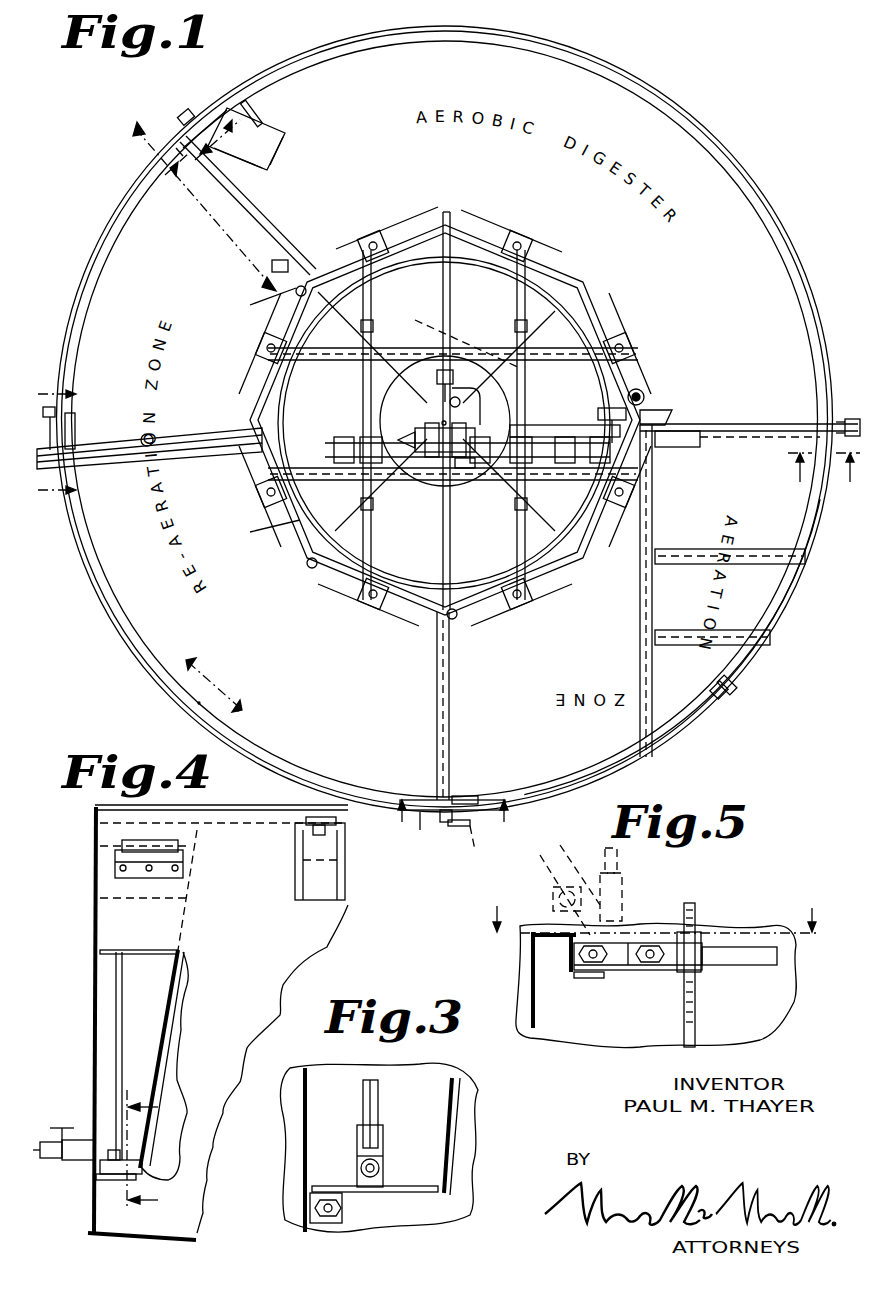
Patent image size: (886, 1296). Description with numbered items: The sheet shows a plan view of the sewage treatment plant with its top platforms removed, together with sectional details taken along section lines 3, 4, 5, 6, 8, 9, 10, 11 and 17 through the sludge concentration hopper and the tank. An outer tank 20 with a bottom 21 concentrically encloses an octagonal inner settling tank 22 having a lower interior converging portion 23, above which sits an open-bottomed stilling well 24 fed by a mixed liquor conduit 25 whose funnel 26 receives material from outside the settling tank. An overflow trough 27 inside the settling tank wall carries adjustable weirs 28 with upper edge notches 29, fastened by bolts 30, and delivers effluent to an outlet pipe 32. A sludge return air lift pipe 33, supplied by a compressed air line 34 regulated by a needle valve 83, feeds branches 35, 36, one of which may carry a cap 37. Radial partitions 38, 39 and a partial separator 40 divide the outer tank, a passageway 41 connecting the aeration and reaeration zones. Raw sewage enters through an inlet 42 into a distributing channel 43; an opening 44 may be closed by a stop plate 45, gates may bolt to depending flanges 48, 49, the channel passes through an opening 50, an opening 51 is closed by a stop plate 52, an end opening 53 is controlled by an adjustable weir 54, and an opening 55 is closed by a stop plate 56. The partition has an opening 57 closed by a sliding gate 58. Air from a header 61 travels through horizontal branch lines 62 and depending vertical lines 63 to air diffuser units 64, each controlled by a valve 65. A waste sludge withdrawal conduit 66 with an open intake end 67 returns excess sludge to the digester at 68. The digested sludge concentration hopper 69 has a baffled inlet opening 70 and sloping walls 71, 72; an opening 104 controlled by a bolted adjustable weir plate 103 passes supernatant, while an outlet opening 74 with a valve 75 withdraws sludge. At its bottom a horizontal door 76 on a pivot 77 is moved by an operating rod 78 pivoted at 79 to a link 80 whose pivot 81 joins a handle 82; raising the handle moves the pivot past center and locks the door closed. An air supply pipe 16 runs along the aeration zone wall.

In FIG. 4, the section line 3— 3 is at (148, 1150).
In FIG. 1, the section line 4— 4 is at (188, 213).
In FIG. 1, the section line 5— 5 is at (207, 162).
In FIG. 5, the section line 6— 6 is at (654, 904).
In FIG. 1, the section line 8— 8 is at (600, 410).
In FIG. 1, the section line 9— 9 is at (220, 669).
In FIG. 1, the section line 10— 10 is at (455, 823).
In FIG. 1, the section line 11— 11 is at (70, 441).
In FIG. 1, the air supply pipe 16 is at (743, 670).
In FIG. 1, the section line 17— 17 is at (823, 477).
In FIG. 1, the outer tank 20 is at (715, 138).
In FIG. 4, the outer tank 20 is at (92, 992).
In FIG. 3, the outer tank 20 is at (470, 1082).
In FIG. 5, the outer tank 20 is at (522, 948).
In FIG. 1, the bottom 21 is at (475, 420).
In FIG. 4, the bottom 21 is at (178, 1235).
In FIG. 1, the inner settling tank 22 is at (262, 535).
In FIG. 1, the lower interior converging portion 23 is at (422, 481).
In FIG. 1, the stilling well 24 is at (502, 372).
In FIG. 1, the mixed liquor conduit 25 is at (540, 425).
In FIG. 1, the funnel 26 is at (690, 448).
In FIG. 1, the overflow trough 27 is at (440, 592).
In FIG. 1, the adjustable weirs 28 is at (306, 566).
In FIG. 1, the upper edge notches 29 is at (442, 584).
In FIG. 1, the bolts 30 is at (508, 275).
In FIG. 1, the outlet pipe 32 is at (195, 432).
In FIG. 1, the sludge return air lift pipe 33 is at (437, 376).
In FIG. 1, the compressed air line 34 is at (433, 439).
In FIG. 1, the branch 35 is at (666, 408).
In FIG. 1, the branch 36 is at (352, 374).
In FIG. 1, the cap 37 is at (270, 300).
In FIG. 1, the radial partition 38 is at (768, 422).
In FIG. 1, the radial partition 39 is at (240, 245).
In FIG. 4, the radial partition 39 is at (108, 916).
In FIG. 3, the radial partition 39 is at (310, 1082).
In FIG. 5, the radial partition 39 is at (538, 1010).
In FIG. 1, the partial separator 40 is at (452, 716).
In FIG. 1, the passageway 41 is at (436, 622).
In FIG. 1, the inlet 42 is at (455, 826).
In FIG. 1, the raw sewage distributing channel 43 is at (498, 800).
In FIG. 1, the opening 44 is at (466, 796).
In FIG. 1, the stop plate 45 is at (452, 810).
In FIG. 1, the depending flange 48 is at (480, 845).
In FIG. 1, the depending flange 49 is at (430, 824).
In FIG. 1, the opening 50 is at (836, 422).
In FIG. 1, the opening 51 is at (726, 692).
In FIG. 1, the stop plate 52 is at (712, 682).
In FIG. 1, the end opening 53 is at (45, 428).
In FIG. 1, the adjustable weir 54 is at (76, 426).
In FIG. 1, the opening 55 is at (195, 706).
In FIG. 1, the stop plate 56 is at (240, 712).
In FIG. 4, the opening 57 is at (295, 867).
In FIG. 1, the gate 58 is at (272, 264).
In FIG. 4, the gate 58 is at (310, 817).
In FIG. 1, the header 61 is at (428, 462).
In FIG. 1, the horizontal branch lines 62 is at (372, 300).
In FIG. 1, the depending vertical line 63 is at (372, 234).
In FIG. 1, the air diffuser unit 64 is at (345, 244).
In FIG. 1, the valve 65 is at (374, 326).
In FIG. 1, the waste sludge withdrawal conduit 66 is at (422, 318).
In FIG. 1, the open intake end 67 is at (323, 272).
In FIG. 1, the return point 68 is at (646, 390).
In FIG. 1, the digested sludge concentration hopper 69 is at (290, 140).
In FIG. 4, the digested sludge concentration hopper 69 is at (182, 970).
In FIG. 3, the digested sludge concentration hopper 69 is at (456, 1118).
In FIG. 5, the digested sludge concentration hopper 69 is at (598, 1022).
In FIG. 1, the hopper inlet opening 70 is at (264, 112).
In FIG. 1, the sloping wall 71 is at (282, 128).
In FIG. 4, the sloping wall 71 is at (139, 977).
In FIG. 3, the sloping wall 71 is at (458, 1078).
In FIG. 1, the sloping wall 72 is at (262, 166).
In FIG. 4, the sloping wall 72 is at (178, 1000).
In FIG. 4, the outlet opening 74 is at (98, 1178).
In FIG. 4, the valve 75 is at (60, 1126).
In FIG. 4, the horizontal door 76 is at (135, 1162).
In FIG. 3, the horizontal door 76 is at (408, 1186).
In FIG. 3, the pivot 77 is at (342, 1210).
In FIG. 4, the operating rod 78 is at (114, 1040).
In FIG. 3, the operating rod 78 is at (378, 1105).
In FIG. 5, the operating rod 78 is at (697, 1004).
In FIG. 3, the pivot 79 is at (361, 1166).
In FIG. 5, the link 80 is at (588, 885).
In FIG. 5, the pivot 81 is at (650, 944).
In FIG. 5, the handle 82 is at (777, 958).
In FIG. 1, the needle valve 83 is at (466, 470).
In FIG. 4, the adjustable weir plate 103 is at (115, 870).
In FIG. 1, the opening 104 is at (236, 205).
In FIG. 4, the opening 104 is at (150, 840).